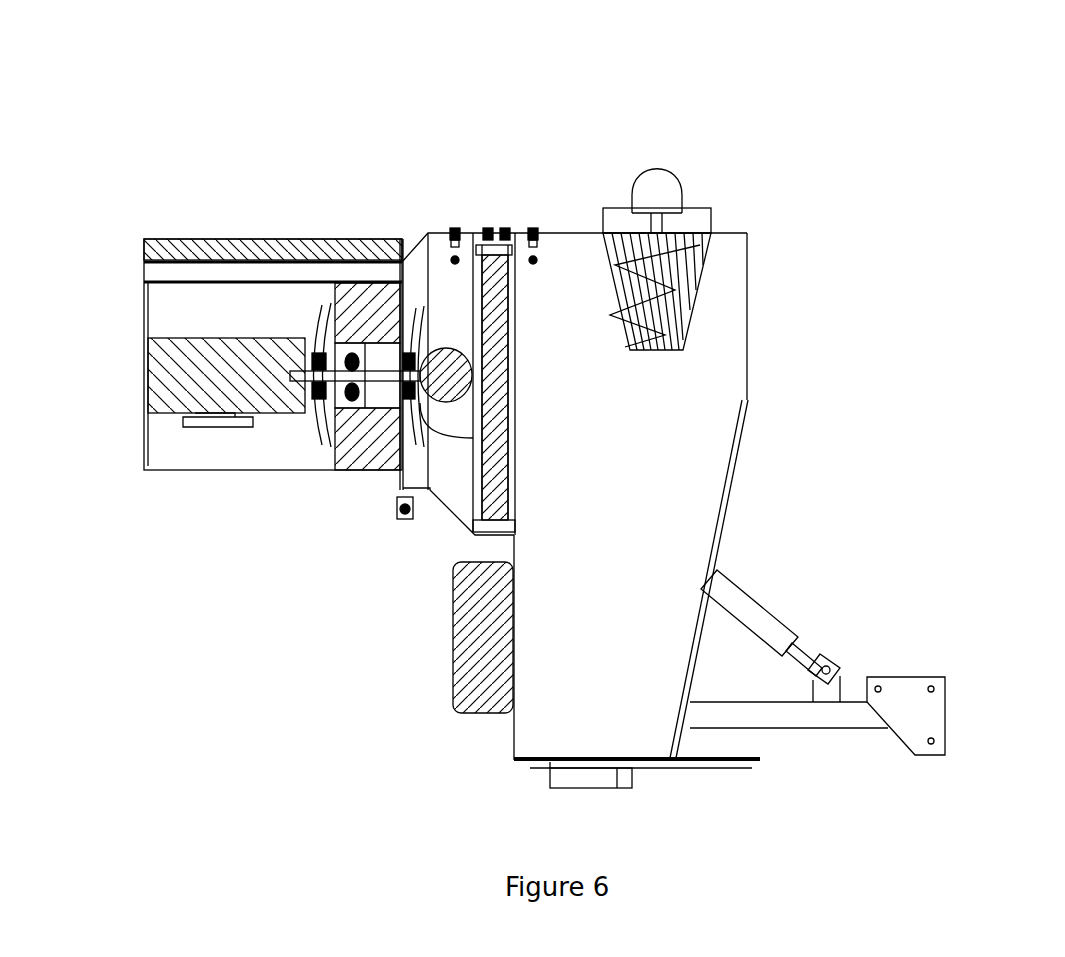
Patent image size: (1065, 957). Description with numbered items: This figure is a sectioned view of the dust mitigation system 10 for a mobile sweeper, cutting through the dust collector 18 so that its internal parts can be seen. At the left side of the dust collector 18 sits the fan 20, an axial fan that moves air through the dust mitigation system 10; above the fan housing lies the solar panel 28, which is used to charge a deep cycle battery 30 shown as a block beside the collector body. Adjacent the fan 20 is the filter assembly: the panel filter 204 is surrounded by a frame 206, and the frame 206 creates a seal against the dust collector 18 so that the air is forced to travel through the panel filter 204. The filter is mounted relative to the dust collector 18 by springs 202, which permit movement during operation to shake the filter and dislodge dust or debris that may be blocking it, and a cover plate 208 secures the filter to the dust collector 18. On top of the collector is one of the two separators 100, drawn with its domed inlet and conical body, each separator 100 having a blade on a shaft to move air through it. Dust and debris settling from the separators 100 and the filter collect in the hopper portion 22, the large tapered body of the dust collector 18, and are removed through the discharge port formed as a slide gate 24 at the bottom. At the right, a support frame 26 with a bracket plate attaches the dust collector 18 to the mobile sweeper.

The dust mitigation system 10 is at (395, 120).
The dust collector 18 is at (445, 185).
The fan 20 is at (163, 281).
The hopper portion 22 is at (545, 673).
The slide gate 24 is at (549, 790).
The support frame 26 is at (946, 677).
The solar panel 28 is at (178, 256).
The deep cycle battery 30 is at (472, 613).
The separator 100 is at (681, 183).
The springs 202 is at (490, 233).
The panel filter 204 is at (498, 424).
The frame 206 is at (477, 507).
The cover plate 208 is at (473, 233).